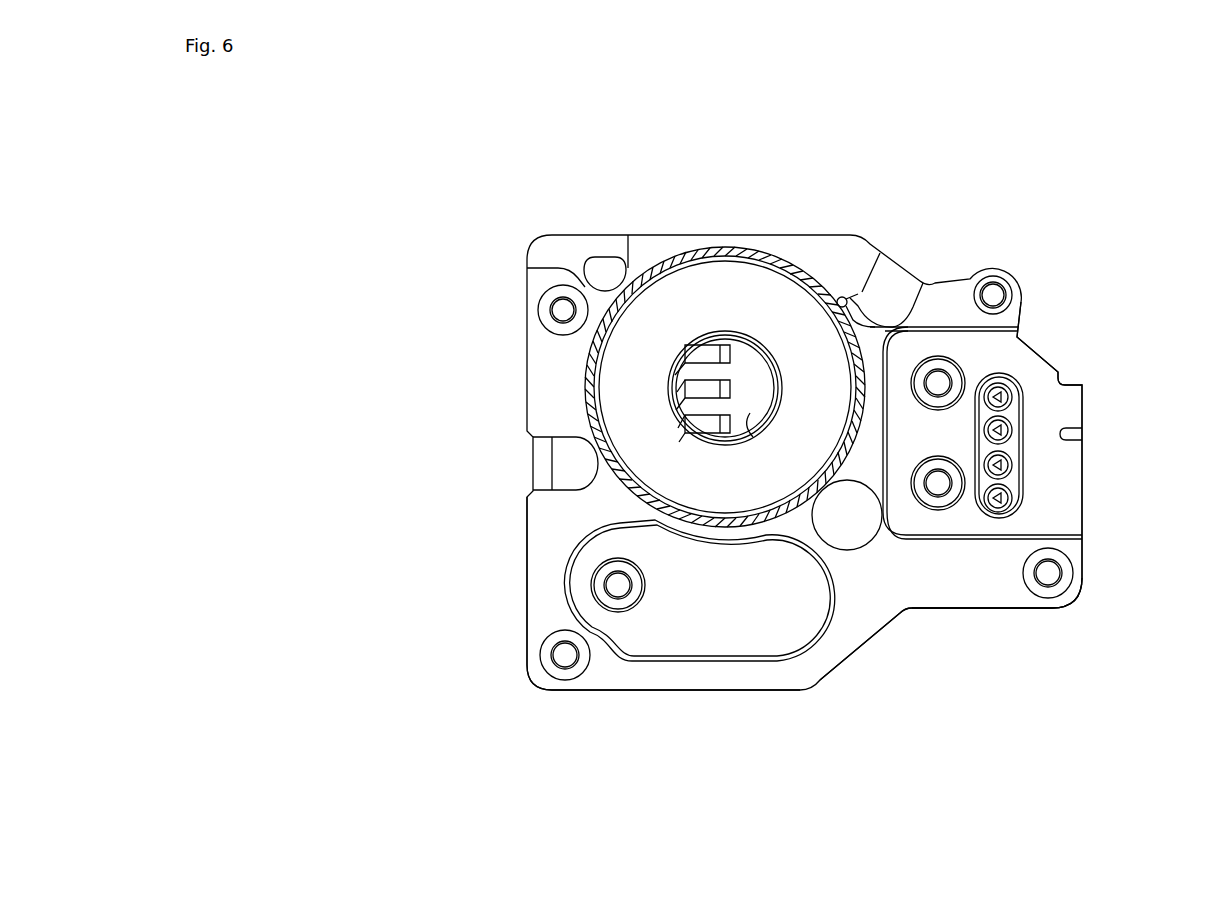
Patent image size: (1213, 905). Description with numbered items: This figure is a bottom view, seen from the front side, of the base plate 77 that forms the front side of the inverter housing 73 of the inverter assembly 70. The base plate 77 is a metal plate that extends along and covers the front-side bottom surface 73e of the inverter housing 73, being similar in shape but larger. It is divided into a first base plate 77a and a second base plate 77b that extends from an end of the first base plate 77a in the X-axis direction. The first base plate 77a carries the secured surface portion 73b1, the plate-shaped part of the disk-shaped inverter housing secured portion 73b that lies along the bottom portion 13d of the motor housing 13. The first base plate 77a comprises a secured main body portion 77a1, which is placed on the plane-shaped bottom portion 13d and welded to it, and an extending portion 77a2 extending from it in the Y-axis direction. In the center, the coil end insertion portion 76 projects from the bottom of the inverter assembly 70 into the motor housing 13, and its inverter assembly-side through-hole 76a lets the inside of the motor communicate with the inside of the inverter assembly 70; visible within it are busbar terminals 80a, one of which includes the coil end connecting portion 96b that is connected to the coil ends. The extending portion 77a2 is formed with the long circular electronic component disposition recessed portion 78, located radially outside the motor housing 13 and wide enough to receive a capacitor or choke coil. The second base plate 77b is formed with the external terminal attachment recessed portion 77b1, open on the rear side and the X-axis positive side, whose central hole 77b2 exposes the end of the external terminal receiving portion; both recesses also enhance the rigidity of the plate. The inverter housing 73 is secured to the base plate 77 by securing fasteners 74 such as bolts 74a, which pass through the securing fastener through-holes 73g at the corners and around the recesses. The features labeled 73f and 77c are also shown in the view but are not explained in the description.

The inverter assembly 70 is at (920, 270).
The motor housing 13 is at (623, 485).
The bottom portion 13d is at (620, 417).
The inverter housing 73 is at (890, 268).
The inverter housing secured portion 73b is at (737, 248).
The secured surface portion 73b1 is at (702, 300).
The bottom surface 73e is at (605, 270).
The slot 73f is at (542, 467).
The securing fastener through-holes 73g is at (560, 303).
The securing fasteners 74 is at (780, 477).
The bolts 74a is at (780, 477).
The coil end insertion portion 76 is at (728, 440).
The inverter assembly-side through-hole 76a is at (752, 420).
The base plate 77 is at (1048, 346).
The first base plate 77a is at (706, 696).
The secured main body portion 77a1 is at (567, 392).
The extending portion 77a2 is at (540, 600).
The second base plate 77b is at (975, 612).
The external terminal attachment recessed portion 77b1 is at (1058, 508).
The hole 77b2 is at (1013, 480).
The inclined wall 77c is at (852, 682).
The electronic component disposition recessed portion 78 is at (670, 628).
The busbar terminals 80a is at (769, 315).
The coil end connecting portion 96b is at (730, 352).